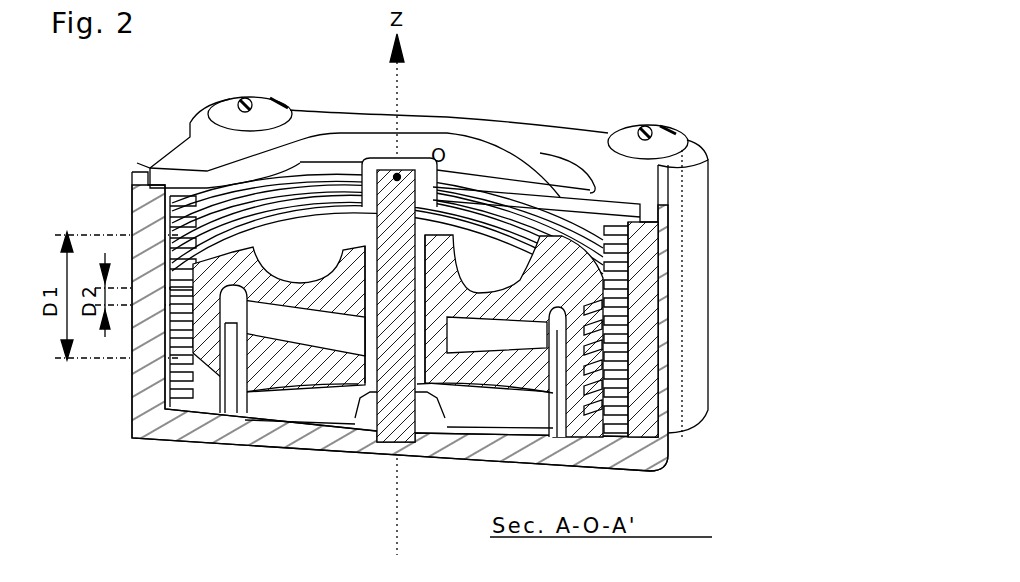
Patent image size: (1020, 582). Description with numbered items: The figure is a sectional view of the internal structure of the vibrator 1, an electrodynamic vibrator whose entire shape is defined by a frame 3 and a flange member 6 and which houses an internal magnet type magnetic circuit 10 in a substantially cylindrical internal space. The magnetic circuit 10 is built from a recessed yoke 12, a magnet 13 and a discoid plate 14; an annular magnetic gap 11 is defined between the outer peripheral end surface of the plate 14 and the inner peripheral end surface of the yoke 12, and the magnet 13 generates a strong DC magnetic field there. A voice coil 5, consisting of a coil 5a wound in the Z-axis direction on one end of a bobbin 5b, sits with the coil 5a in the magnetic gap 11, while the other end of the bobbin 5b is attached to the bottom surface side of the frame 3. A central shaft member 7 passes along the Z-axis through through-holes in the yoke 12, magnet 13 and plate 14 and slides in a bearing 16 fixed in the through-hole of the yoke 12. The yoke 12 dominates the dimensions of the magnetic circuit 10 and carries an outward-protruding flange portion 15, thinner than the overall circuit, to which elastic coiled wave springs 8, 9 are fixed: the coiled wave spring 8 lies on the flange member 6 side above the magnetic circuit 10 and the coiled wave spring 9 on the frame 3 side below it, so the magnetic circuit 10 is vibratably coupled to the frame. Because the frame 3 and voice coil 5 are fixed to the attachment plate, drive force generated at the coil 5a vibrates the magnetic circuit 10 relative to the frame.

The vibrator 1 is at (573, 90).
The frame 3 is at (130, 202).
The voice coil 5 is at (219, 530).
The coil 5a is at (237, 403).
The bobbin 5b is at (248, 402).
The flange member 6 is at (185, 164).
The shaft member 7 is at (373, 443).
The coiled wave spring 8 is at (172, 240).
The coiled wave spring 9 is at (175, 379).
The internal magnet type magnetic circuit 10 is at (774, 380).
The magnetic gap 11 is at (668, 428).
The yoke 12 is at (600, 250).
The magnet 13 is at (560, 312).
The plate 14 is at (605, 372).
The flange portion 15 is at (578, 348).
The bearing 16 is at (560, 205).